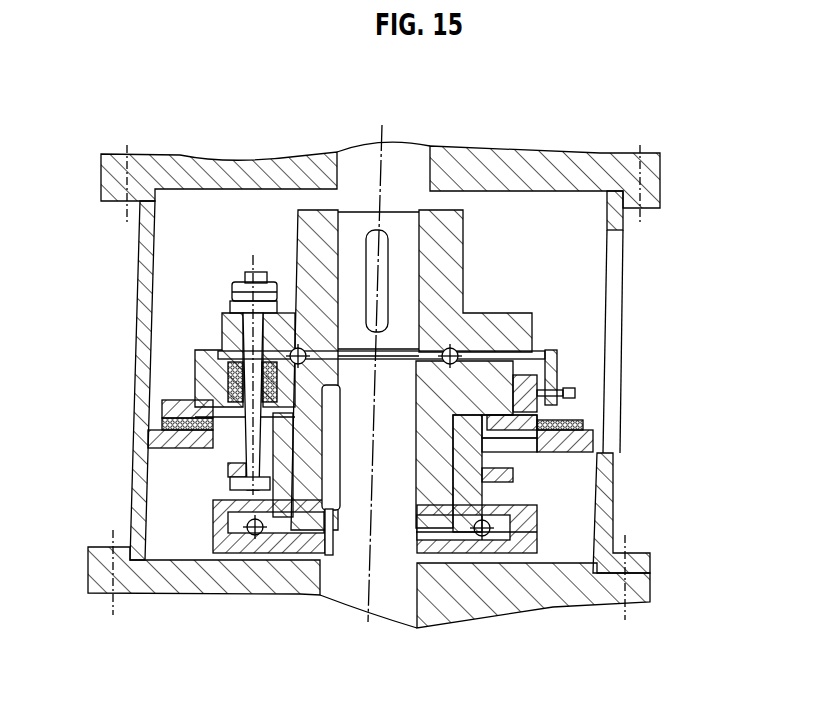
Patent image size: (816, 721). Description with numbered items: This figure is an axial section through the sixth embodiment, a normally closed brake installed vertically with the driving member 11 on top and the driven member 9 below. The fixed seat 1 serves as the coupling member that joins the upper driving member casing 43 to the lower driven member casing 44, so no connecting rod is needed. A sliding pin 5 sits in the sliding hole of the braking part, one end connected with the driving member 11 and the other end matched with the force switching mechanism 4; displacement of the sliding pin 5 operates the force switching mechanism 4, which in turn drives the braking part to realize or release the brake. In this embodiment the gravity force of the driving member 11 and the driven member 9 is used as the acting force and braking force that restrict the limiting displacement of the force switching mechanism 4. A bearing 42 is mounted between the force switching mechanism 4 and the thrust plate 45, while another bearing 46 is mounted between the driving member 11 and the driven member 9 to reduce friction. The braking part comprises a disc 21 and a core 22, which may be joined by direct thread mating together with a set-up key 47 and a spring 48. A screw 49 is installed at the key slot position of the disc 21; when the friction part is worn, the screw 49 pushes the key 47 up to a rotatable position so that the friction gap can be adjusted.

The fixed seat 1 is at (143, 447).
The force switching mechanism 4 is at (500, 465).
The sliding pin 5 is at (240, 452).
The driven member 9 is at (417, 522).
The driving member 11 is at (433, 250).
The disc 21 is at (195, 356).
The core 22 is at (533, 330).
The bearing 42 is at (476, 522).
The upper driving member casing 43 is at (547, 178).
The lower driven member casing 44 is at (548, 597).
The thrust plate 45 is at (513, 533).
The bearing 46 is at (470, 340).
The set-up key 47 is at (540, 385).
The spring 48 is at (552, 410).
The screw 49 is at (576, 393).